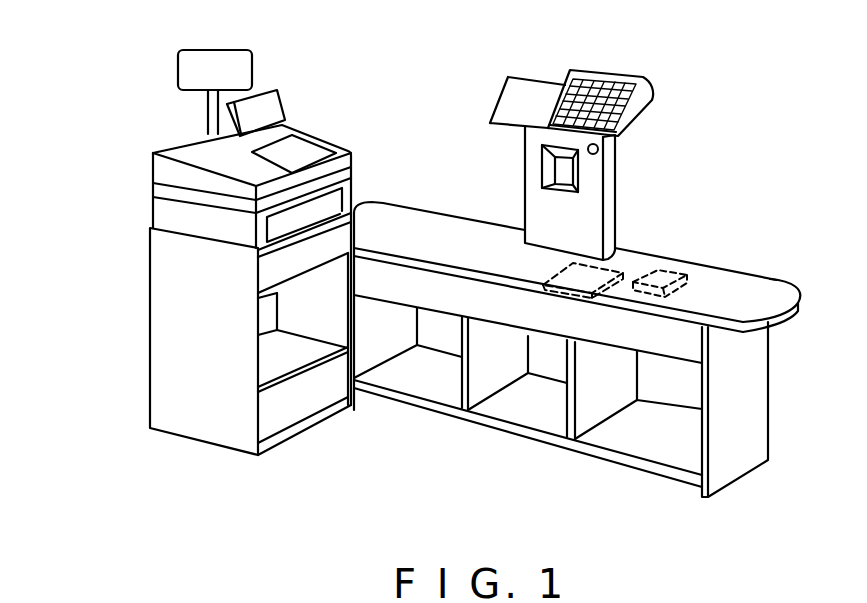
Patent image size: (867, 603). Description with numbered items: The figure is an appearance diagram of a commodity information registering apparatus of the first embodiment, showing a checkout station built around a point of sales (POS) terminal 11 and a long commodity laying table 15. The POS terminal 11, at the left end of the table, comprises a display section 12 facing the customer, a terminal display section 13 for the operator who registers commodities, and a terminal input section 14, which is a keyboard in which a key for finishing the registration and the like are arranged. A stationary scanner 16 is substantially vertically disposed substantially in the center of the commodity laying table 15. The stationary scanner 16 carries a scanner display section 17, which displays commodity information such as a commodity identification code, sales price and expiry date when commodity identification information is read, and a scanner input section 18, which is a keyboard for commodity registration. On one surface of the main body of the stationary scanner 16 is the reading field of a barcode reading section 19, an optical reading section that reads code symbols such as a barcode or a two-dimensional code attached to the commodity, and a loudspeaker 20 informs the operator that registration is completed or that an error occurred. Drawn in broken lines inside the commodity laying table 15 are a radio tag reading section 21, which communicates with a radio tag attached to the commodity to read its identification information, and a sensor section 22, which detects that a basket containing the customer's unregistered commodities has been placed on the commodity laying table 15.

The point of sales (POS) terminal 11 is at (140, 190).
The display section 12 is at (218, 50).
The terminal display section 13 is at (273, 88).
The terminal input section 14 is at (310, 148).
The commodity laying table 15 is at (410, 220).
The stationary scanner 16 is at (525, 188).
The scanner display section 17 is at (538, 77).
The scanner input section 18 is at (603, 77).
The barcode reading section 19 is at (568, 175).
The loudspeaker 20 is at (599, 150).
The radio tag reading section 21 is at (610, 268).
The sensor section 22 is at (690, 265).